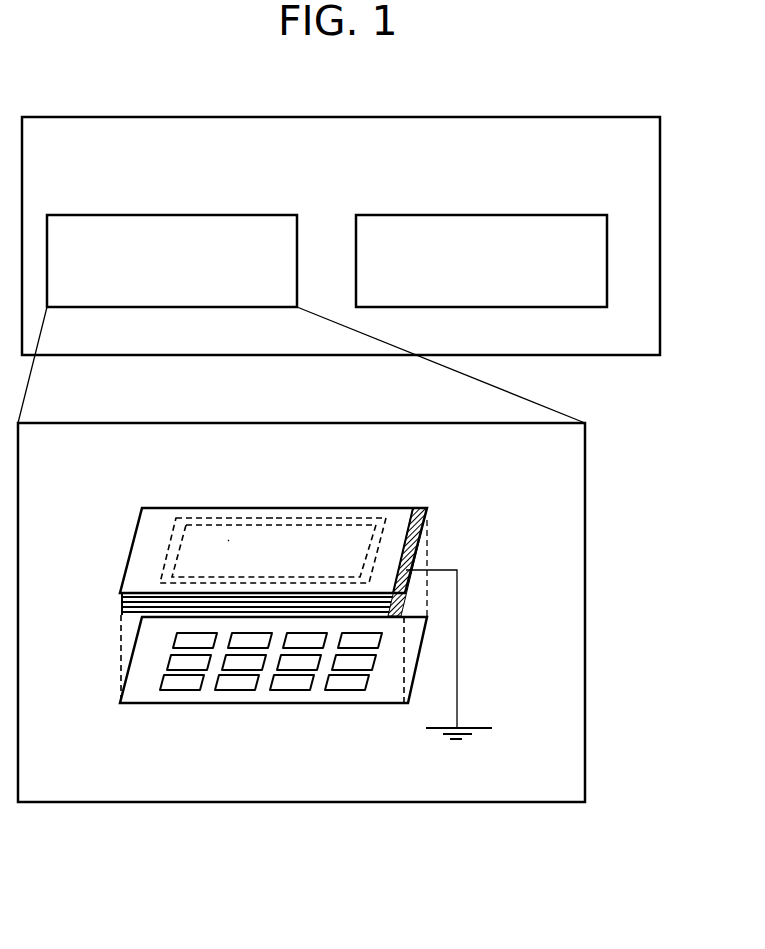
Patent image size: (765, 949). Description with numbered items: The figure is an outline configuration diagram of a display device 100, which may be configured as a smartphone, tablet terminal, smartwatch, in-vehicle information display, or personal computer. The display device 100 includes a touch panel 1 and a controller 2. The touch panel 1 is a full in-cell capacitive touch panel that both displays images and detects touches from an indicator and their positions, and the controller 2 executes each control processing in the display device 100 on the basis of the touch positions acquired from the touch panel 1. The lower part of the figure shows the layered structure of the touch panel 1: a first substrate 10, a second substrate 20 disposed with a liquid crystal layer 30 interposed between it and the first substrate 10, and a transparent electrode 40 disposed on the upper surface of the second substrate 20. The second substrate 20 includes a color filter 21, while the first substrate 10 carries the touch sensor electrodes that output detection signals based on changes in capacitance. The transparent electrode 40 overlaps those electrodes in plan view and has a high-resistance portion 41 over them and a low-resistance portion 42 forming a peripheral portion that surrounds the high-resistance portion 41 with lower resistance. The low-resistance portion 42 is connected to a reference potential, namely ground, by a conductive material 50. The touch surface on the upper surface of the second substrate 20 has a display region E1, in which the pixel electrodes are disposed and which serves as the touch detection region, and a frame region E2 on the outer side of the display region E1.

The display device 100 is at (598, 116).
The touch panel 1 is at (272, 215).
The controller 2 is at (581, 215).
The first substrate 10 is at (137, 676).
The second substrate 20 is at (73, 585).
The color filter 21 is at (122, 596).
The liquid crystal layer 30 is at (121, 640).
The transparent electrode 40 is at (139, 524).
The high-resistance portion 41 is at (176, 519).
The low-resistance portion 42 is at (402, 516).
The conductive material 50 is at (424, 514).
The display region E1 is at (228, 538).
The frame region E2 is at (272, 516).